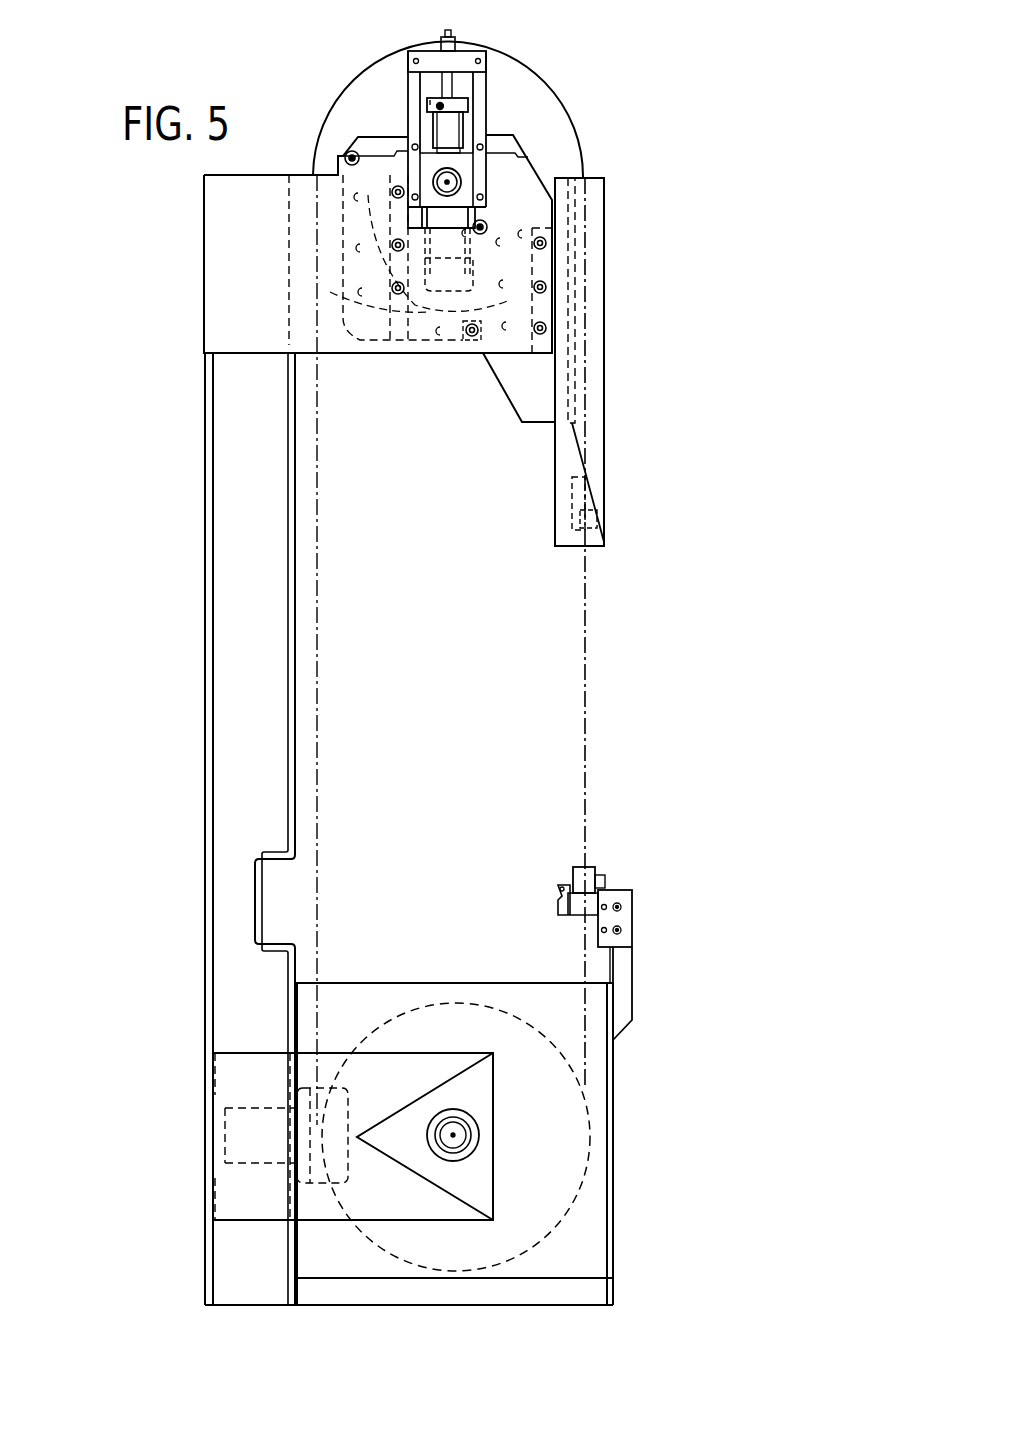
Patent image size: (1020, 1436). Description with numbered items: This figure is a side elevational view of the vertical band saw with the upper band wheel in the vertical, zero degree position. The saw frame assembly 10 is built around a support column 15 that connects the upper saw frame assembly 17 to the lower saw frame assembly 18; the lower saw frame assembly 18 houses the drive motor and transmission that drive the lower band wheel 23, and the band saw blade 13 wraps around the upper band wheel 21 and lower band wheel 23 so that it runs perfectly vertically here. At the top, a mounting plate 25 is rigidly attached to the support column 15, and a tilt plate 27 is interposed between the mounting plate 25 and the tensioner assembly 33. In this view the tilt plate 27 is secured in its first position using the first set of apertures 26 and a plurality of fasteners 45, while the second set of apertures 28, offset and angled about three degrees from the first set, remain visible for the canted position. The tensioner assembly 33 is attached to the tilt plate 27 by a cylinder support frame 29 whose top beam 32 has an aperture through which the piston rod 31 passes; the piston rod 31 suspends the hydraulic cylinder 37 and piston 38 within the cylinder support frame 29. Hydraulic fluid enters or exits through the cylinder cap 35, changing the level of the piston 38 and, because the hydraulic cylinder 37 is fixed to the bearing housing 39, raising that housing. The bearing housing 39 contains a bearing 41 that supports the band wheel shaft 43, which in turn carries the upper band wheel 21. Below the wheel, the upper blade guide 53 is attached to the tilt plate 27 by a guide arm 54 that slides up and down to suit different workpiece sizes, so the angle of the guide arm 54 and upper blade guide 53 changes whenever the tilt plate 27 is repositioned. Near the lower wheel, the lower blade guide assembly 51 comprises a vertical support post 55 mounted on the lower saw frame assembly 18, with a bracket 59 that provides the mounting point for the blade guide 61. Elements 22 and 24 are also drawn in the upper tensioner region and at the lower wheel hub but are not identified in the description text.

The saw frame assembly 10 is at (115, 482).
The band saw blade 13 is at (586, 611).
The support column 15 is at (232, 704).
The upper saw frame assembly 17 is at (308, 55).
The lower saw frame assembly 18 is at (617, 1148).
The upper band wheel 21 is at (335, 106).
The blade guide 22 is at (446, 180).
The lower band wheel 23 is at (588, 1078).
The wheel hub 24 is at (455, 1135).
The mounting plate 25 is at (346, 337).
The first set of apertures 26 is at (392, 285).
The tilt plate 27 is at (540, 408).
The second set of apertures 28 is at (465, 328).
The cylinder support frame 29 is at (487, 80).
The piston rod 31 is at (452, 40).
The top beam 32 is at (472, 52).
The tensioner assembly 33 is at (387, 42).
The cylinder cap 35 is at (438, 104).
The hydraulic cylinder 37 is at (468, 125).
The piston 38 is at (487, 126).
The bearing housing 39 is at (484, 198).
The bearing 41 is at (458, 175).
The band wheel shaft 43 is at (462, 181).
The fasteners 45 is at (547, 328).
The lower blade guide assembly 51 is at (648, 882).
The upper blade guide 53 is at (617, 503).
The guide arm 54 is at (607, 445).
The vertical support post 55 is at (632, 978).
The bracket 59 is at (570, 915).
The blade guide 61 is at (590, 866).